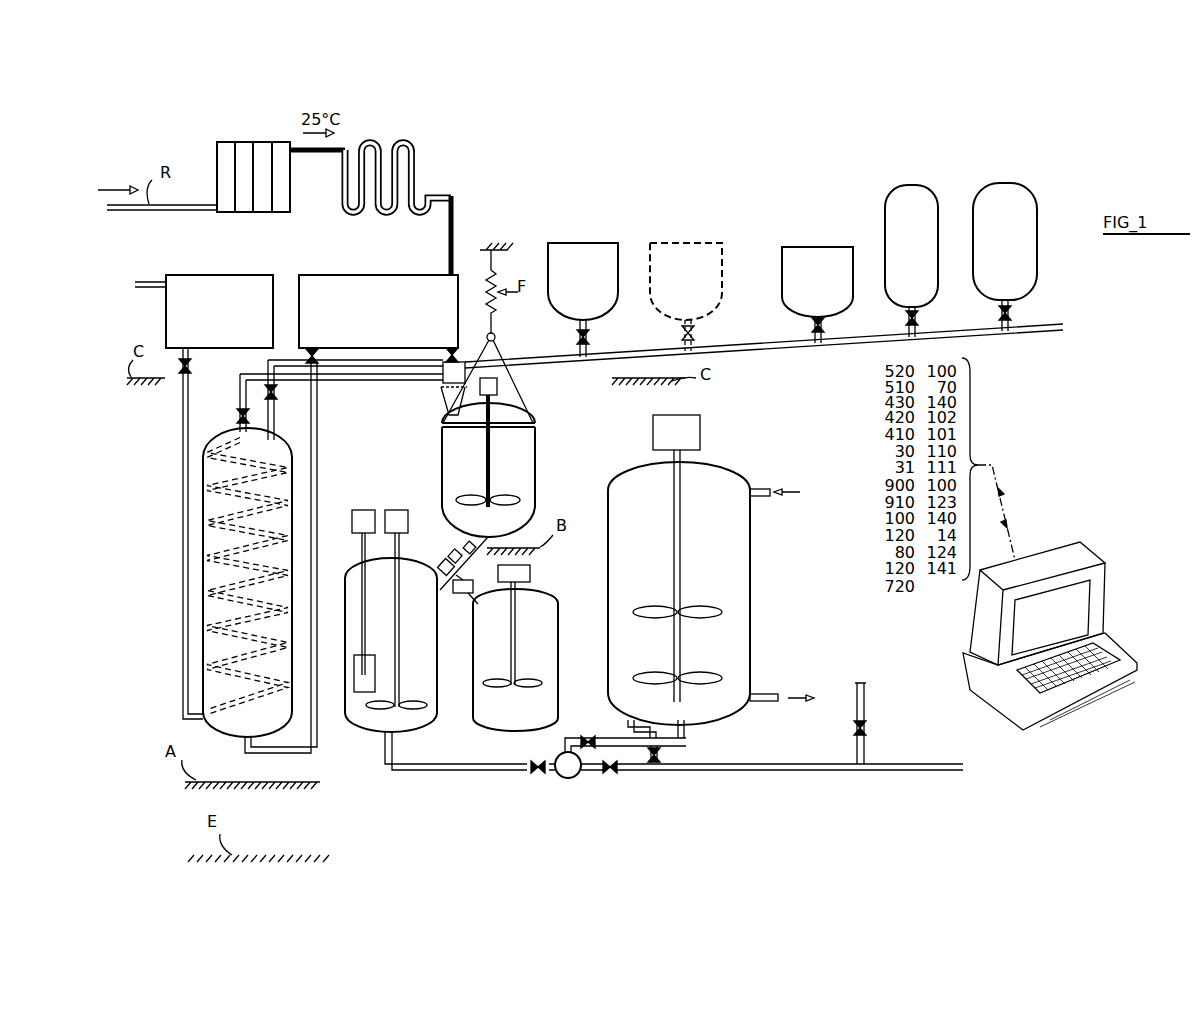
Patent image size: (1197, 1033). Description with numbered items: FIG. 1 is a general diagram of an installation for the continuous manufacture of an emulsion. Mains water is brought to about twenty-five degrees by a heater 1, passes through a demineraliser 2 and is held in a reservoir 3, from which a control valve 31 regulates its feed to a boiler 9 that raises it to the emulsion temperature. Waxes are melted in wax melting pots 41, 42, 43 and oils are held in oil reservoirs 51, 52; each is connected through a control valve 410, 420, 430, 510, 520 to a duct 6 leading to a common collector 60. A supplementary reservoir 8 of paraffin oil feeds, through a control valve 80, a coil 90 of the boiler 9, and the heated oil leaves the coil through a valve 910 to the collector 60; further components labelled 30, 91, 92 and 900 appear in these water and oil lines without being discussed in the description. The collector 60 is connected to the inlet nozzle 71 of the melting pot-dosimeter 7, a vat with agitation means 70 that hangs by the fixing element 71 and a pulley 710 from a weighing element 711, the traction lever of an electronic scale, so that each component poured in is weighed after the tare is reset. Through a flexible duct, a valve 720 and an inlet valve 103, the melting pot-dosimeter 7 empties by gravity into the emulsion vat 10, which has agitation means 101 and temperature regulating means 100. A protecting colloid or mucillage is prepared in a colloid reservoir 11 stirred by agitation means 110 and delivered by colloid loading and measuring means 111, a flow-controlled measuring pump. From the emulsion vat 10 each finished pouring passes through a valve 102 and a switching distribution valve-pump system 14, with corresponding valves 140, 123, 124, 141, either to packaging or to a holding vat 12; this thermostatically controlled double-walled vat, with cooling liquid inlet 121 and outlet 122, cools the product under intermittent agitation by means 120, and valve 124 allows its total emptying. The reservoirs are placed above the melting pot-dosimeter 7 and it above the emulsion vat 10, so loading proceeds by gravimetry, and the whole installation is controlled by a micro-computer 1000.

The heater 1 is at (246, 200).
The demineraliser 2 is at (421, 148).
The reservoir 3 is at (340, 275).
The duct 6 is at (752, 354).
The melting pot-dosimeter 7 is at (520, 459).
The supplementary reservoir 8 is at (220, 290).
The boiler 9 is at (291, 440).
The emulsion vat 10 is at (346, 574).
The colloid reservoir 11 is at (545, 640).
The holding vat 12 is at (718, 480).
The switching distribution valve 14 is at (570, 784).
The valve 30 is at (458, 356).
The control valve 31 is at (332, 368).
The wax melting pot 41 is at (578, 243).
The wax melting pot 42 is at (678, 243).
The wax melting pot 43 is at (798, 247).
The oil reservoir 51 is at (910, 196).
The oil reservoir 52 is at (1012, 192).
The common collector 60 is at (443, 362).
The agitation means 70 is at (503, 385).
The inlet nozzle 71 is at (511, 355).
The control valve 80 is at (191, 367).
The coil 90 is at (225, 676).
The valve 91 is at (275, 362).
The valve 92 is at (237, 405).
The temperature regulating means 100 is at (360, 510).
The agitation means 101 is at (397, 510).
The valve 102 is at (534, 777).
The inlet valve 103 is at (448, 567).
The agitation means 110 is at (530, 575).
The colloid loading and measuring means 111 is at (459, 596).
The agitation means 120 is at (690, 430).
The inlet 121 is at (765, 488).
The outlet 122 is at (765, 693).
The valve 123 is at (587, 738).
The valve 124 is at (666, 756).
The valve 140 is at (620, 774).
The valve 141 is at (866, 734).
The control valve 410 is at (592, 337).
The control valve 420 is at (698, 332).
The control valve 430 is at (833, 322).
The control valve 510 is at (923, 316).
The control valve 520 is at (1021, 310).
The pulley 710 is at (496, 334).
The weighing element 711 is at (500, 270).
The valve 720 is at (462, 543).
The pipe 900 is at (238, 424).
The valve 910 is at (280, 392).
The micro-computer 1000 is at (990, 690).